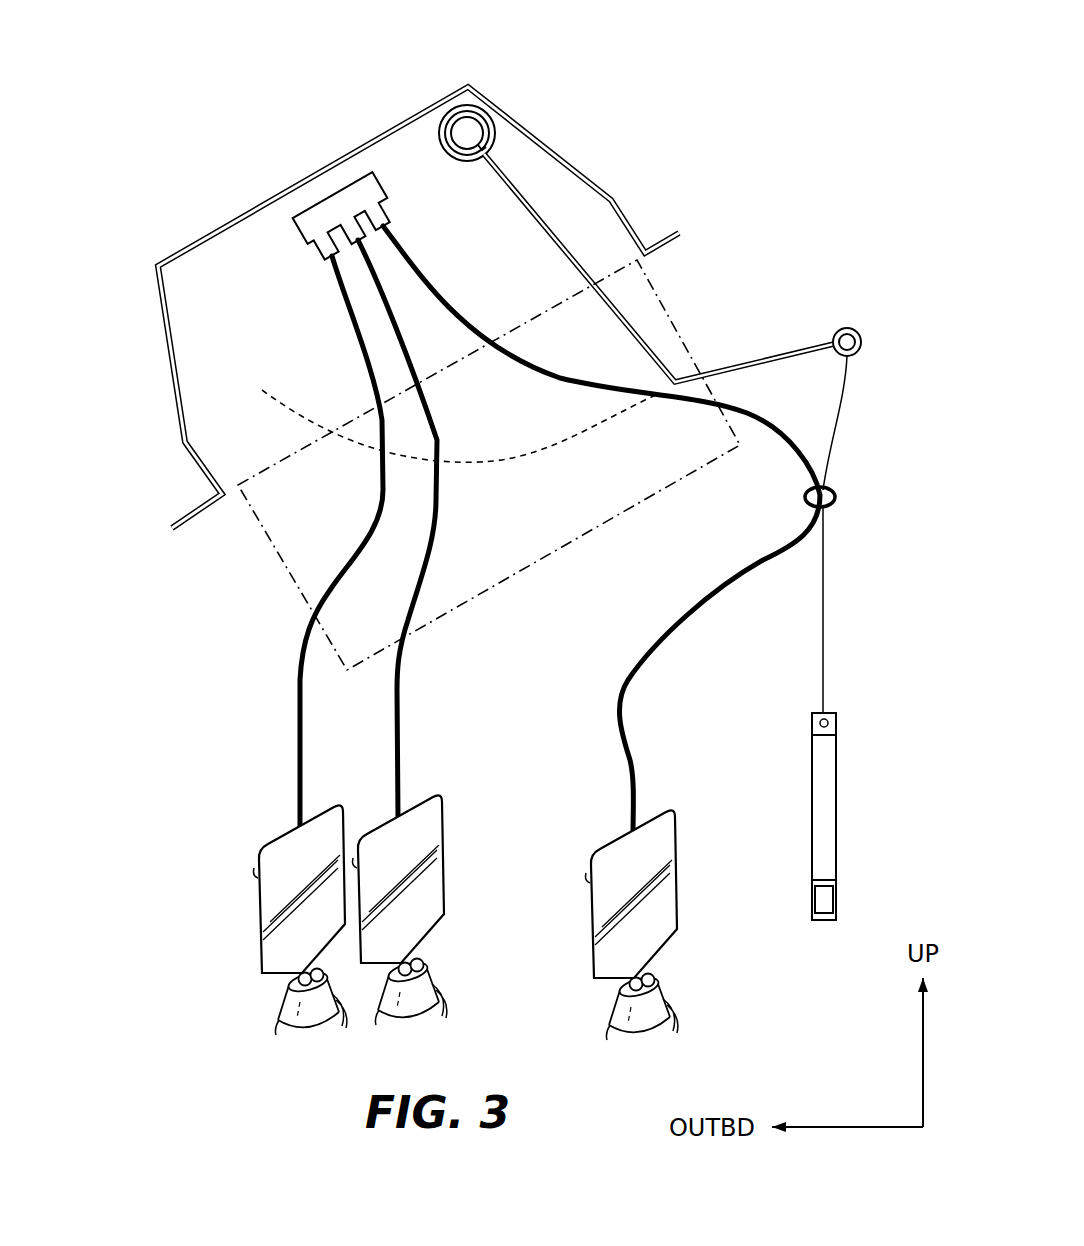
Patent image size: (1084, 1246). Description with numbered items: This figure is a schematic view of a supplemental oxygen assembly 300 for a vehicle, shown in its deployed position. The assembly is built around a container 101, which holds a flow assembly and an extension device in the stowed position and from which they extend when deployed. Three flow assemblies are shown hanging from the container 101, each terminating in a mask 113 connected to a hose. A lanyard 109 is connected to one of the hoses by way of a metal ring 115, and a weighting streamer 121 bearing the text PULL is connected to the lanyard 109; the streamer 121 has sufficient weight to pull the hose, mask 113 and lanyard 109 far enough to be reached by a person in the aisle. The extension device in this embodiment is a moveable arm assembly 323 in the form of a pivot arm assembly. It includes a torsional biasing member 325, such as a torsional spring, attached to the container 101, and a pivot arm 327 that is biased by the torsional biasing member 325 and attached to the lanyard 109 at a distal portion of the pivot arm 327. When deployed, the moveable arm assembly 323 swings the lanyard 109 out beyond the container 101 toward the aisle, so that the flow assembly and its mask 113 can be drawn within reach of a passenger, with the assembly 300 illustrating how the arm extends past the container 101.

The supplemental oxygen assembly 300 is at (420, 43).
The container 101 is at (186, 439).
The torsional biasing member 325 is at (503, 132).
The moveable arm assembly 323 is at (503, 208).
The pivot arm 327 is at (622, 290).
The lanyard 109 is at (832, 568).
The metal ring 115 is at (838, 498).
The weighting streamer 121 is at (845, 814).
The mask 113 is at (255, 889).